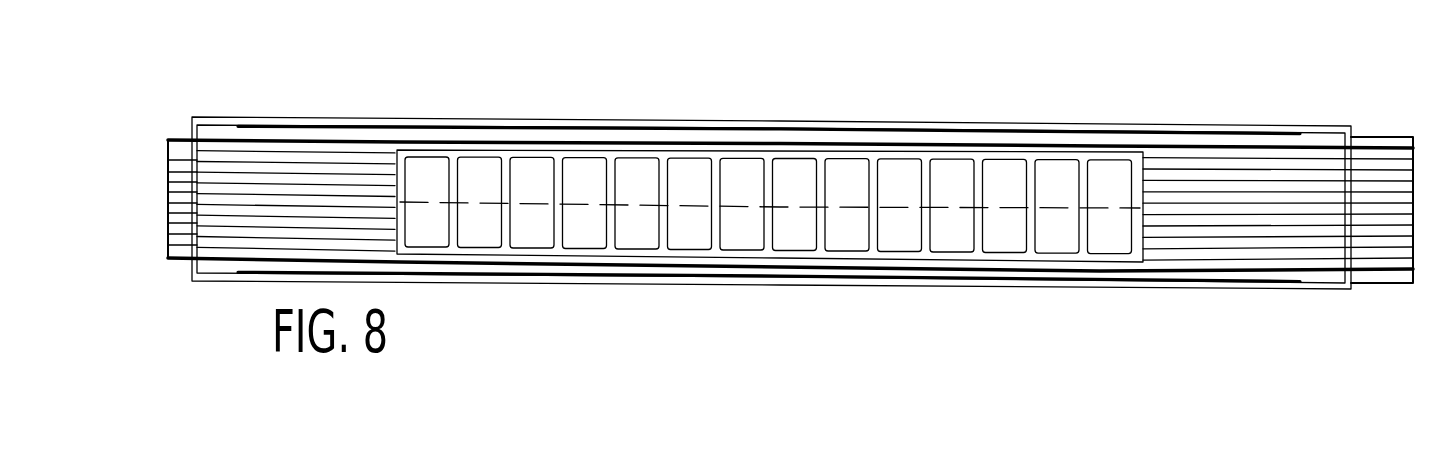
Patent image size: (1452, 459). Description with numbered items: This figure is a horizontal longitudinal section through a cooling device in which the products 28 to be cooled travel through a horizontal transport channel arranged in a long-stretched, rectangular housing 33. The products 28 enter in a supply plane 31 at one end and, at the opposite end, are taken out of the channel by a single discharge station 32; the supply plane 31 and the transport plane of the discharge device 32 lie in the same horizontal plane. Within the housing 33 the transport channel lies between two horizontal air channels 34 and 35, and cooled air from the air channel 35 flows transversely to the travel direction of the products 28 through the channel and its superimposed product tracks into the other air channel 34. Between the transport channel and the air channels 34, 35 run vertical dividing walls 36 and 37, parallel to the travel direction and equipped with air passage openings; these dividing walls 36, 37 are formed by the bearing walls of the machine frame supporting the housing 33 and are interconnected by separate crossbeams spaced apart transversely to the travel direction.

The products 28 is at (475, 180).
The supply plane 31 is at (177, 140).
The discharge station 32 is at (1402, 142).
The housing 33 is at (983, 122).
The air channel 34 is at (853, 137).
The air channel 35 is at (648, 268).
The dividing wall 36 is at (1215, 145).
The dividing wall 37 is at (847, 263).